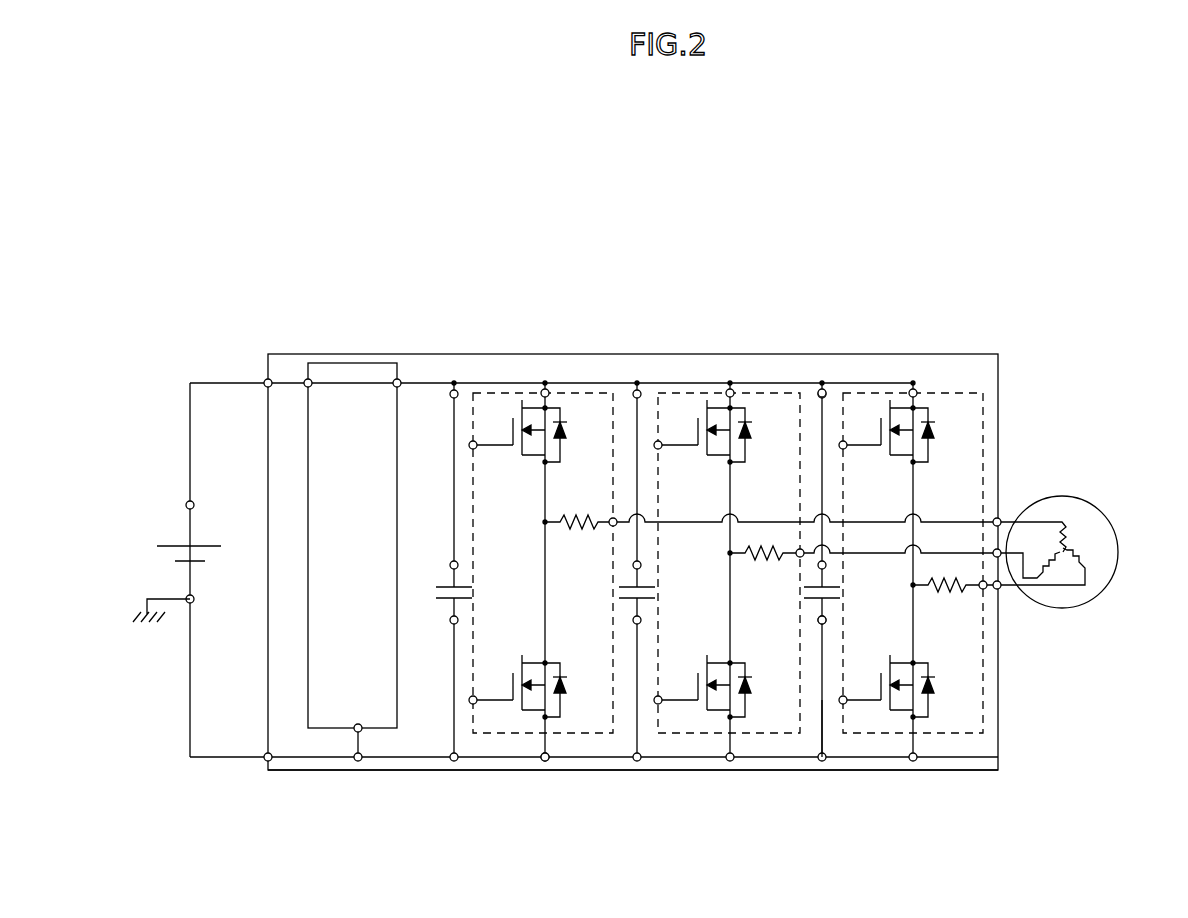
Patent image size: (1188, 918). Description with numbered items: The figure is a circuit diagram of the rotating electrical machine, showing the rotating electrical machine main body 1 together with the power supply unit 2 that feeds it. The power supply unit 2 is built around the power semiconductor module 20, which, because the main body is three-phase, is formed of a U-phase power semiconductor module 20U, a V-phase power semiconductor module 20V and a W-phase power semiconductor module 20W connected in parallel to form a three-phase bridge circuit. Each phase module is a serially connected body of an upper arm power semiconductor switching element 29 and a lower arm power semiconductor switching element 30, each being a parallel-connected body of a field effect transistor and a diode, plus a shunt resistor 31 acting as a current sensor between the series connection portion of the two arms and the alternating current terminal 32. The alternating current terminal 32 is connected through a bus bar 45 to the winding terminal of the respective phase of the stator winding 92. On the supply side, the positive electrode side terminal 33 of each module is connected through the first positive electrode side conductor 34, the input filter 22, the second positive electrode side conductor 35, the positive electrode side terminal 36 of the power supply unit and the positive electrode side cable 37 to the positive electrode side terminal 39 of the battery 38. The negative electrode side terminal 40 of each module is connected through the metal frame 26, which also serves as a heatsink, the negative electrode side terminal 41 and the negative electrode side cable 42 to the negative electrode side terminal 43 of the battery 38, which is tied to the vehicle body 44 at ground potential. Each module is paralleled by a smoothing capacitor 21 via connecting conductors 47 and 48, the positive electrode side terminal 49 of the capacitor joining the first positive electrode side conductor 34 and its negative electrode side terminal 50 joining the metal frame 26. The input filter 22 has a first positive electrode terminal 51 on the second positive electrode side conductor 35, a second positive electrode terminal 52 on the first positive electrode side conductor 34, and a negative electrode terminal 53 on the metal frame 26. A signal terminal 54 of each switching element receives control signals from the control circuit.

The rotating electrical machine main body 1 is at (1093, 478).
The power supply unit 2 is at (953, 278).
The power semiconductor module 20 is at (520, 205).
The U-phase power semiconductor module 20U is at (545, 393).
The V-phase power semiconductor module 20V is at (637, 393).
The W-phase power semiconductor module 20W is at (913, 393).
The smoothing capacitor 21 is at (470, 592).
The input filter 22 is at (345, 363).
The metal frame 26 is at (745, 772).
The upper arm power semiconductor switching element 29 is at (513, 423).
The lower arm power semiconductor switching element 30 is at (535, 712).
The shunt resistor 31 is at (582, 515).
The alternating current terminal 32 is at (613, 525).
The positive electrode side terminal 33 is at (573, 400).
The first positive electrode side conductor 34 is at (700, 400).
The second positive electrode side conductor 35 is at (266, 380).
The positive electrode side terminal 36 is at (262, 380).
The positive electrode side cable 37 is at (200, 383).
The battery 38 is at (170, 548).
The positive electrode side terminal 39 is at (190, 505).
The negative electrode side terminal 40 is at (545, 760).
The negative electrode side terminal 41 is at (268, 770).
The negative electrode side cable 42 is at (215, 757).
The negative electrode side terminal 43 is at (190, 602).
The vehicle body 44 is at (140, 612).
The bus bar 45 is at (960, 520).
The connecting conductor 47 is at (824, 400).
The connecting conductor 48 is at (825, 718).
The positive electrode side terminal 49 is at (800, 550).
The negative electrode side terminal 50 is at (822, 625).
The first positive electrode terminal 51 is at (308, 383).
The second positive electrode terminal 52 is at (397, 383).
The negative electrode terminal 53 is at (358, 745).
The signal terminal 54 is at (473, 702).
The stator winding 92 is at (1105, 520).